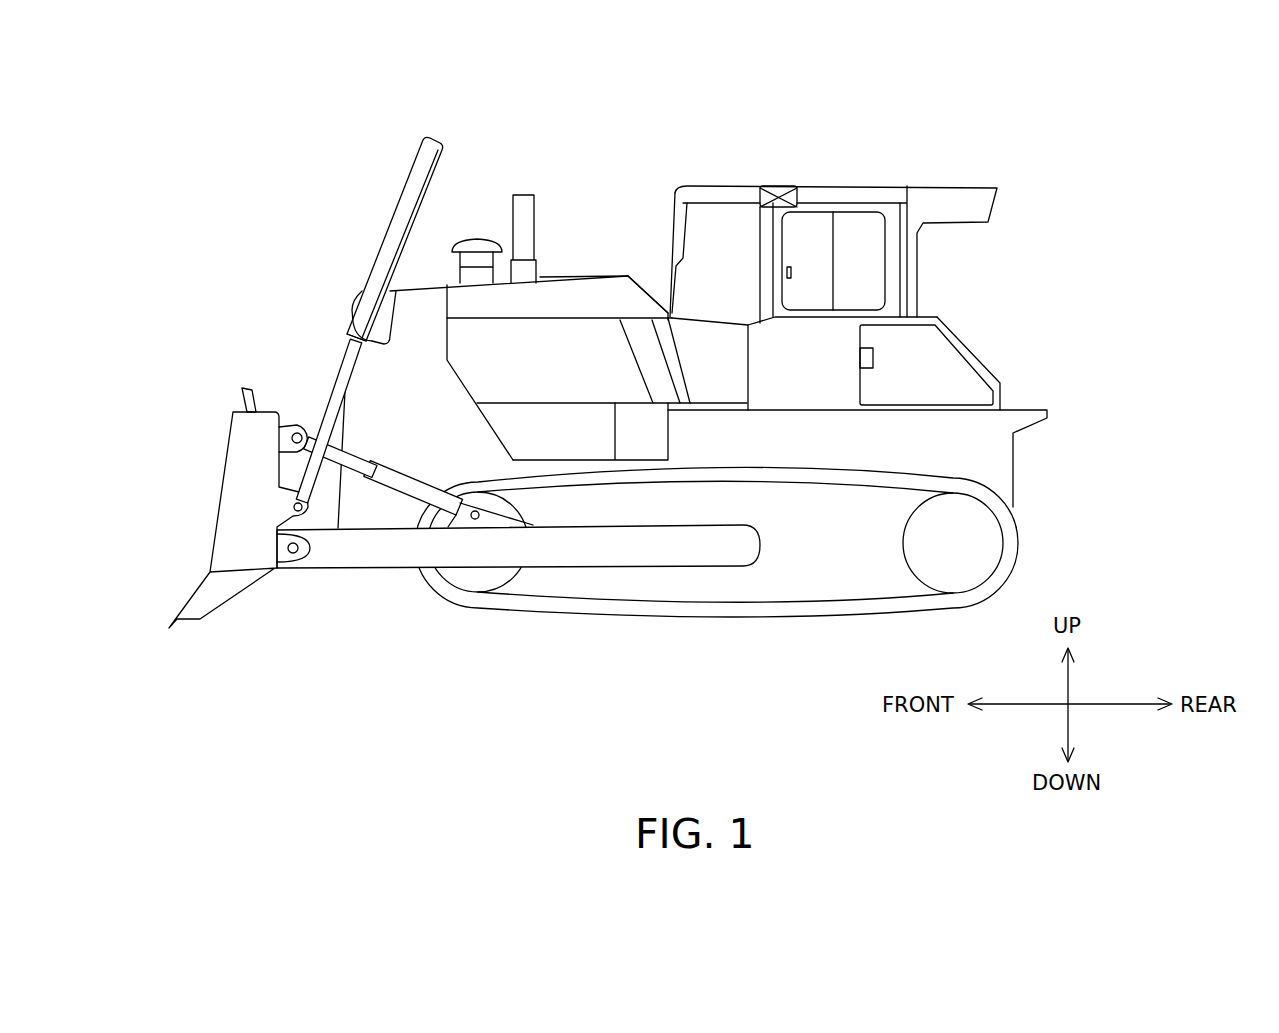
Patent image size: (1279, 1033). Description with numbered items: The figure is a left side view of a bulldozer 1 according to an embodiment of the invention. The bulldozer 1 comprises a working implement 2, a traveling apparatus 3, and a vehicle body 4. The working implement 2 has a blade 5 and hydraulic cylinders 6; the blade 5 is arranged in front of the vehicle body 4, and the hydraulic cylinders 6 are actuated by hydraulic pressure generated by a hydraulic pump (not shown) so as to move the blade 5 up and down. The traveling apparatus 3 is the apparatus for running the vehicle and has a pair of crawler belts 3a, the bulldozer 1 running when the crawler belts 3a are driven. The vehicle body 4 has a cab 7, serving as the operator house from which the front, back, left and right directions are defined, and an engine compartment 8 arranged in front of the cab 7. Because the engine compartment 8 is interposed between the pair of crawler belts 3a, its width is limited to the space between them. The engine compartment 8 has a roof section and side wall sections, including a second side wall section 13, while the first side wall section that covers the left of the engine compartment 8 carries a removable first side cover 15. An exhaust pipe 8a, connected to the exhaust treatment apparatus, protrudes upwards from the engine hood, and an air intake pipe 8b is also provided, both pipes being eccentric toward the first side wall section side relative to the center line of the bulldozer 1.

The bulldozer 1 is at (323, 131).
The working implement 2 is at (253, 379).
The traveling apparatus 3 is at (563, 619).
The crawler belt 3a is at (673, 613).
The vehicle body 4 is at (840, 131).
The blade 5 is at (228, 507).
The hydraulic cylinder 6 is at (342, 380).
The cab 7 is at (706, 185).
The engine compartment 8 is at (602, 290).
The exhaust pipe 8a is at (525, 195).
The air intake pipe 8b is at (477, 238).
The second side wall section 13 is at (565, 275).
The first side cover 15 is at (618, 360).